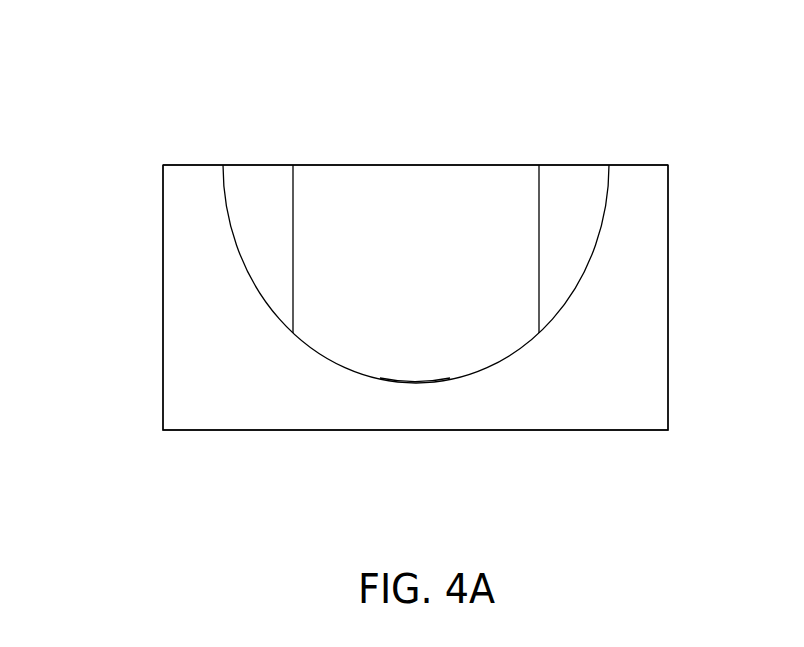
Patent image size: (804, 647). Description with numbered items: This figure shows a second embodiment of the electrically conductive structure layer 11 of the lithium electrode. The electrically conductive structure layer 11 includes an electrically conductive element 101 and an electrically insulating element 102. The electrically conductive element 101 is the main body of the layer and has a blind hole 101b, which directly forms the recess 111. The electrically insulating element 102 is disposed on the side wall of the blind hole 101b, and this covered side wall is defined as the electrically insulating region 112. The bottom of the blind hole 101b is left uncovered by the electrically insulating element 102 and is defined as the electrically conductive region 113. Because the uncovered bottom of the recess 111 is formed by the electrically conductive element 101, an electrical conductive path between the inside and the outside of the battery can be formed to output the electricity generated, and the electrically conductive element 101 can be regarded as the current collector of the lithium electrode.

The electrically conductive structure layer 11 is at (113, 97).
The electrically conductive element 101 is at (163, 322).
The blind hole 101b is at (488, 182).
The electrically insulating element 102 is at (585, 187).
The recess 111 is at (424, 150).
The electrically insulating region 112 is at (293, 213).
The electrically conductive region 113 is at (413, 383).